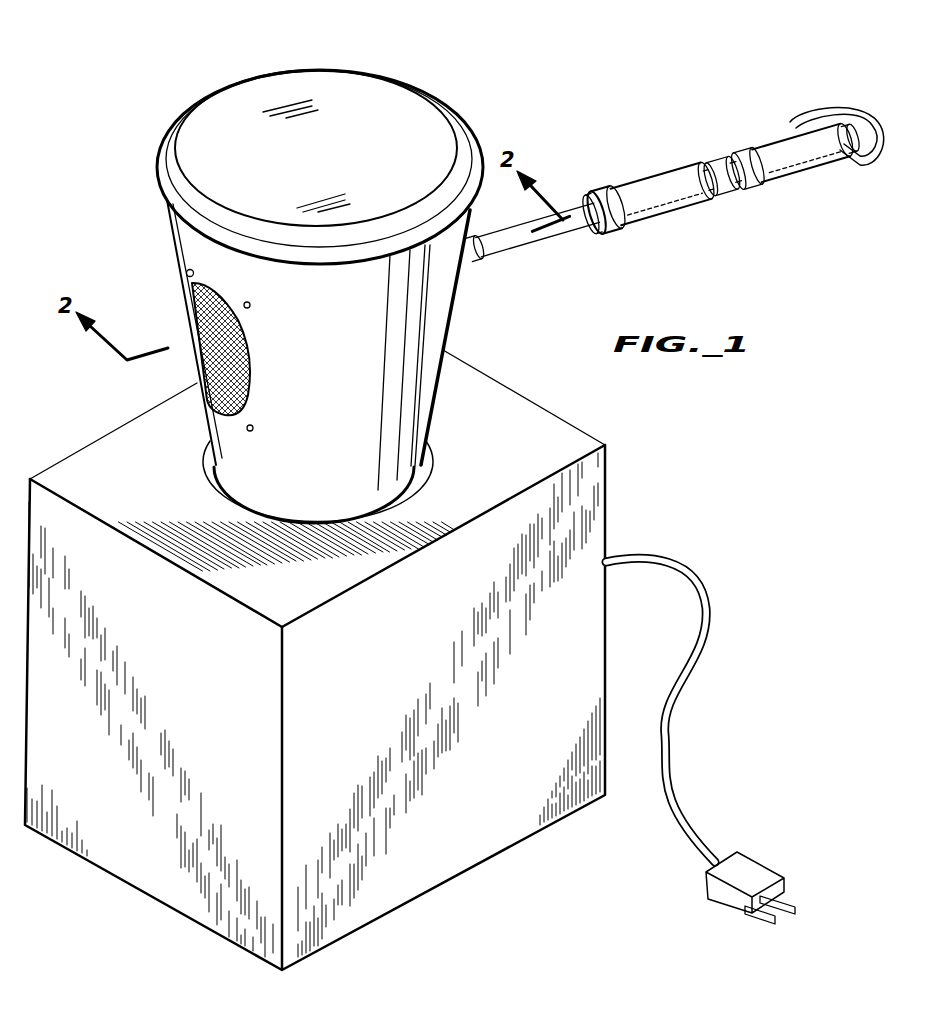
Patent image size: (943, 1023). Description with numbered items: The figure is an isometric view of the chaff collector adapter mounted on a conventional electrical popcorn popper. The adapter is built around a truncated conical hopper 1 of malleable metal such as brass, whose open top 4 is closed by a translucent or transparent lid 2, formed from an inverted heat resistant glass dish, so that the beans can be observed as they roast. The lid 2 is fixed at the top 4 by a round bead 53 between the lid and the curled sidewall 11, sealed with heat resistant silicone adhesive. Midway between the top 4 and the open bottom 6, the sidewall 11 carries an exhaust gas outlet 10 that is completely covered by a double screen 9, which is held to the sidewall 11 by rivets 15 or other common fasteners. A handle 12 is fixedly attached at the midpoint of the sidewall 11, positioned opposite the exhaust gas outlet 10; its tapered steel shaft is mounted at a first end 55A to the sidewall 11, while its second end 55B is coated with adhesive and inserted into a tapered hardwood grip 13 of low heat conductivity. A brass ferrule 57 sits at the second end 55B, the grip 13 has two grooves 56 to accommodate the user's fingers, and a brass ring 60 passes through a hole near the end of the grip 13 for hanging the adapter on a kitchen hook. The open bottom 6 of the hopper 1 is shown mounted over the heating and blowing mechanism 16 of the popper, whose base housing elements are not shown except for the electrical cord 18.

The truncated conical hopper 1 is at (455, 416).
The lid 2 is at (430, 198).
The open top 4 is at (385, 107).
The open bottom 6 is at (240, 510).
The double screen 9 is at (203, 338).
The exhaust gas outlet 10 is at (198, 375).
The sidewall 11 is at (440, 315).
The handle 12 is at (527, 243).
The grip 13 is at (665, 175).
The rivets 15 is at (186, 273).
The heating and blowing mechanism 16 is at (607, 493).
The electrical cord 18 is at (672, 556).
The round bead 53 is at (176, 152).
The first end 55A is at (466, 268).
The second end 55B is at (607, 232).
The grooves 56 is at (748, 185).
The brass ferrule 57 is at (608, 190).
The brass ring 60 is at (858, 148).